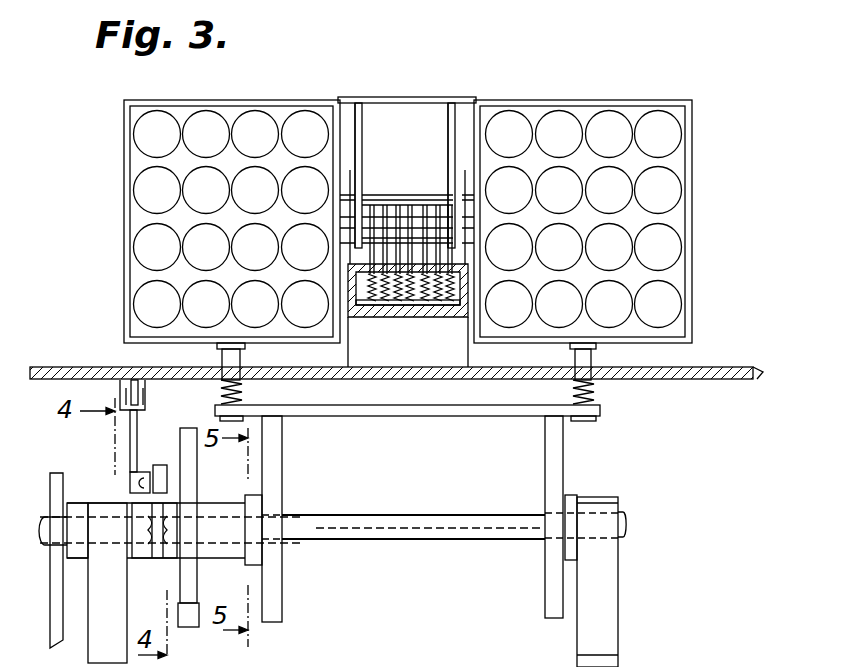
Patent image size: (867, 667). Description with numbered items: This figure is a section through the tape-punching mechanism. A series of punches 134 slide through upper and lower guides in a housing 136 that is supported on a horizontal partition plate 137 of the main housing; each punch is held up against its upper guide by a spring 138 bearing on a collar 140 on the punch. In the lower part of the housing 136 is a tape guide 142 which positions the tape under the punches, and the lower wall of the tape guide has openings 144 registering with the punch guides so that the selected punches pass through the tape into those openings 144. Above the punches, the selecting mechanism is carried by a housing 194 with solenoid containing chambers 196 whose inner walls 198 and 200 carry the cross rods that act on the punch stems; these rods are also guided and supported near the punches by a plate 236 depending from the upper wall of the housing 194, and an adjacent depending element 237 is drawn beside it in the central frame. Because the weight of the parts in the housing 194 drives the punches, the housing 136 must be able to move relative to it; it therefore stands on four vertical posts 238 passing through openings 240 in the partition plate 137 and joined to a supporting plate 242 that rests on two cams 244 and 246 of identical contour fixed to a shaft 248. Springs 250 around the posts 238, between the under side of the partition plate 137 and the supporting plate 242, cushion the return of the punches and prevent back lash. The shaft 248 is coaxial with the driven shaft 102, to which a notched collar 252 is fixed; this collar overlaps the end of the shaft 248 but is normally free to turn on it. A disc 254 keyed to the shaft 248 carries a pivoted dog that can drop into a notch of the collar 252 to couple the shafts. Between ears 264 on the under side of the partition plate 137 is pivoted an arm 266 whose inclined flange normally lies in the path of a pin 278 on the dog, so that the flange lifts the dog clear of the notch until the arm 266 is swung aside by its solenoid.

The shaft 102 is at (47, 503).
The punches 134 is at (460, 318).
The housing 136 is at (462, 168).
The horizontal partition plate 137 is at (703, 369).
The spring 138 is at (350, 282).
The collar 140 is at (470, 276).
The tape guide 142 is at (378, 318).
The openings 144 is at (412, 312).
The housing 194 is at (124, 125).
The solenoid containing chambers 196 is at (148, 163).
The inner wall 198 is at (472, 133).
The inner wall 200 is at (342, 133).
The plate 236 is at (448, 133).
The post 237 is at (363, 130).
The vertical posts 238 is at (222, 357).
The openings 240 is at (612, 377).
The supporting plate 242 is at (477, 410).
The cam 244 is at (553, 450).
The cam 246 is at (272, 580).
The shaft 248 is at (455, 527).
The springs 250 is at (595, 390).
The notched collar 252 is at (155, 558).
The disc 254 is at (192, 488).
The ears 264 is at (143, 399).
The arm 266 is at (137, 430).
The pin 278 is at (148, 470).